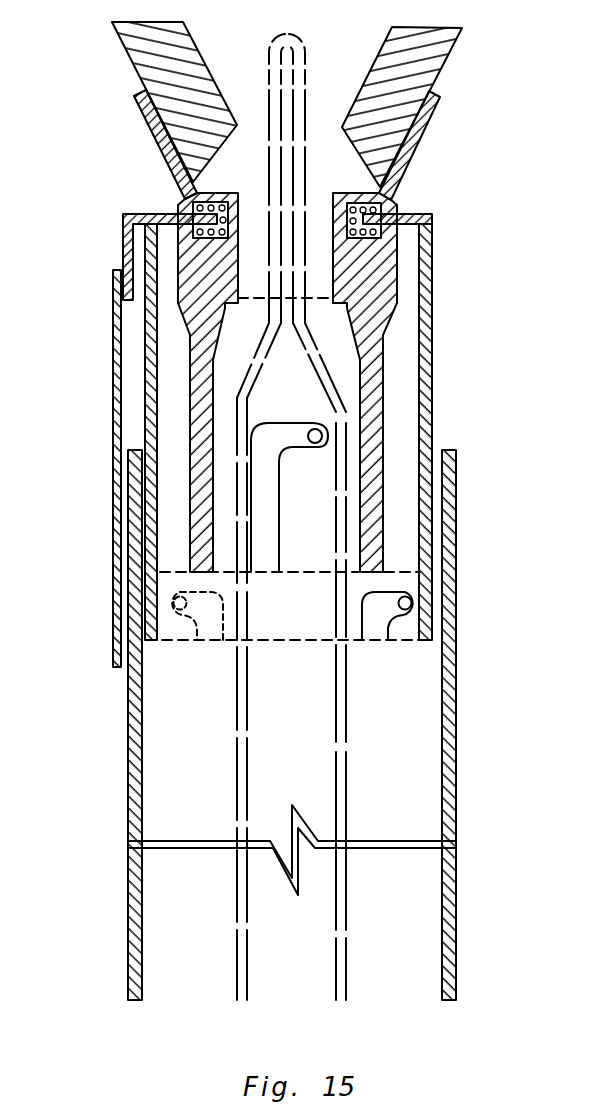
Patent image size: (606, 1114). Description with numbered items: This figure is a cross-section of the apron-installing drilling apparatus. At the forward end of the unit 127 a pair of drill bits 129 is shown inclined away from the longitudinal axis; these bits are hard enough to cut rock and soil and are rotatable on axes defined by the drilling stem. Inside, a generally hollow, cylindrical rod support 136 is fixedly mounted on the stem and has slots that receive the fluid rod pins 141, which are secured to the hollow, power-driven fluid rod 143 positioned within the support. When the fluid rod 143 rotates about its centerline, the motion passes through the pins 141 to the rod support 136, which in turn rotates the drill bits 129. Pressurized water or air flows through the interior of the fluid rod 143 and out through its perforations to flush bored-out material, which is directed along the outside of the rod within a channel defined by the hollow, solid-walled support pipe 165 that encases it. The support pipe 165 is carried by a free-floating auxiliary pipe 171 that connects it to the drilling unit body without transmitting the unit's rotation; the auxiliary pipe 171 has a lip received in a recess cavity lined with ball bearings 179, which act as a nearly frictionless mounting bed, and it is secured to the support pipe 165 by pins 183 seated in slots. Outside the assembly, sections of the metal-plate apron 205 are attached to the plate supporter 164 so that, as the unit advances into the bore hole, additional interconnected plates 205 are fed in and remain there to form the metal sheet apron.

The drill bits 129 is at (433, 63).
The unit 127 is at (168, 173).
The plate supporter 164 is at (123, 249).
The bearings 179 is at (400, 247).
The rod support 136 is at (190, 343).
The apron sections 205 is at (114, 436).
The auxiliary pipe 171 is at (433, 410).
The fluid rod pins 141 is at (272, 510).
The pins 183 is at (414, 603).
The fluid rod 143 is at (237, 753).
The support pipe 165 is at (457, 790).